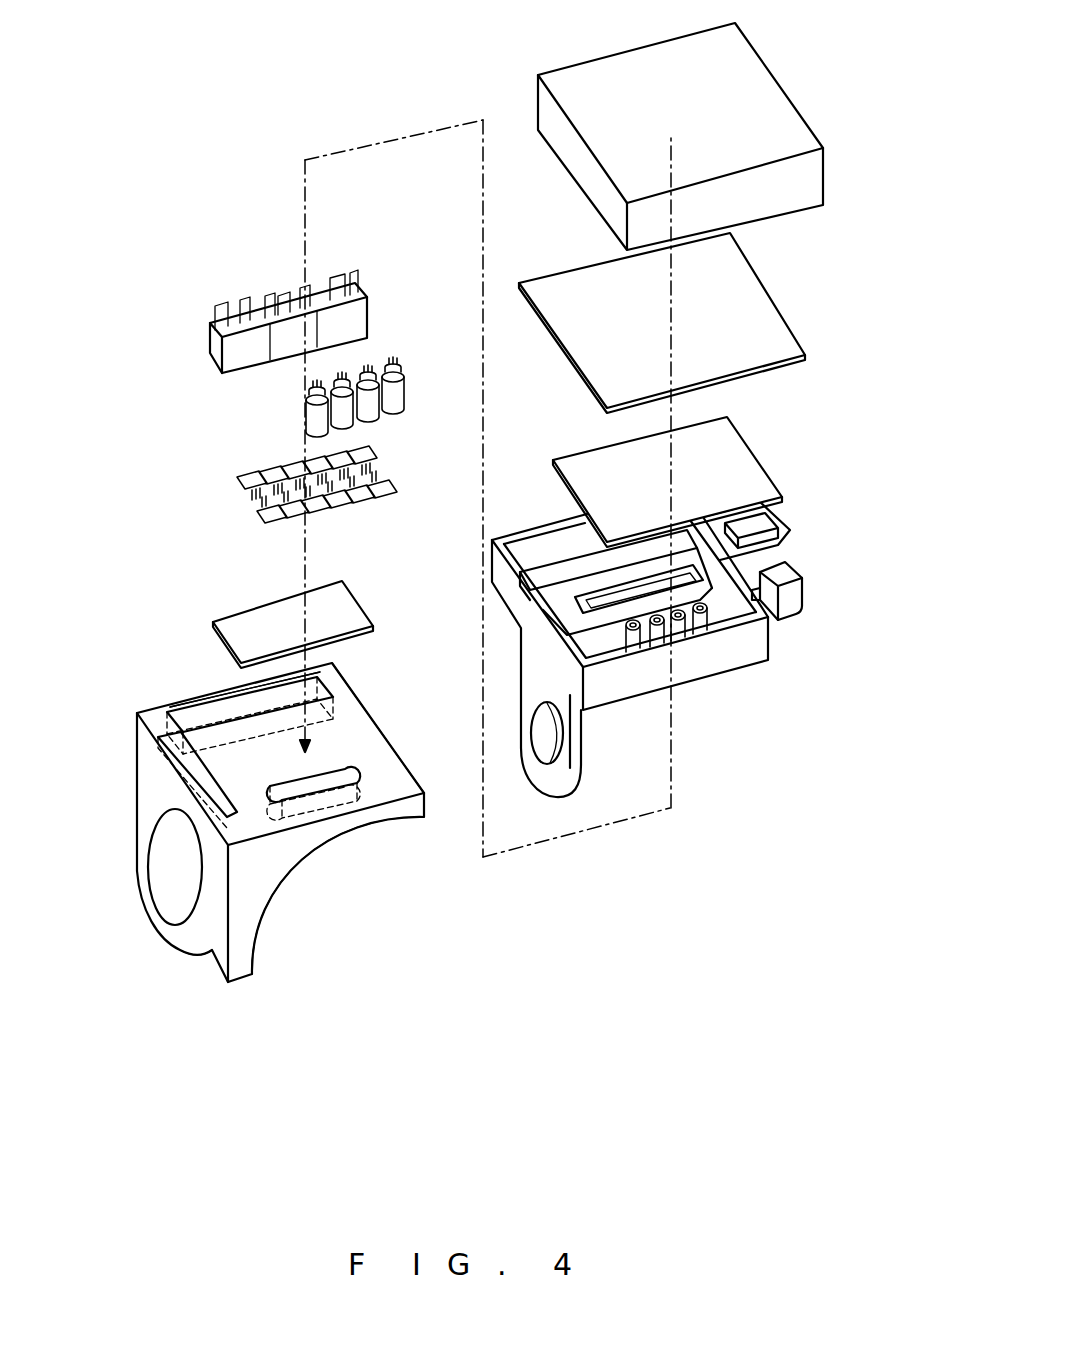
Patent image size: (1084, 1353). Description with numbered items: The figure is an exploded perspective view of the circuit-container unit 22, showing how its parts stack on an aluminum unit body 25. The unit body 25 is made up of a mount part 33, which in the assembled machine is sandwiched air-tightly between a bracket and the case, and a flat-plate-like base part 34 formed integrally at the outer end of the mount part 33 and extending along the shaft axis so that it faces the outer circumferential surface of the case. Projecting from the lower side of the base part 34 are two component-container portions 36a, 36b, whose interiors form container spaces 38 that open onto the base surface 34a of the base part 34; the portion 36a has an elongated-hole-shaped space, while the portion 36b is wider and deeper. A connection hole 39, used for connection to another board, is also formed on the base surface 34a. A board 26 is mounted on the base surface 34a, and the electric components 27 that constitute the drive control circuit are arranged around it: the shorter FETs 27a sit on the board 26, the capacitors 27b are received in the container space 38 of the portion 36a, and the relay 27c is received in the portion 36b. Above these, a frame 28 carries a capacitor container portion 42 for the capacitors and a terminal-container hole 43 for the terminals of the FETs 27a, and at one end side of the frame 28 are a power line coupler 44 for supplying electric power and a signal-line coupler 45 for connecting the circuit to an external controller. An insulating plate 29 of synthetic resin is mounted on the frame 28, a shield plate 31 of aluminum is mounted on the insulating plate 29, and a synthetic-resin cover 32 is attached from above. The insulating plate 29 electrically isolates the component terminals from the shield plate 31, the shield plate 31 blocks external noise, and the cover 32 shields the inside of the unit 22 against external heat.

The unit 22 is at (537, 878).
The unit body 25 is at (267, 839).
The board 26 is at (248, 614).
The electric components 27 is at (306, 378).
The FETs 27a is at (373, 468).
The capacitors 27b is at (370, 367).
The relay 27c is at (258, 292).
The frame 28 is at (733, 660).
The insulating plate 29 is at (733, 458).
The shield plate 31 is at (748, 317).
The cover 32 is at (773, 128).
The mount part 33 is at (208, 943).
The base part 34 is at (388, 795).
The base surface 34a is at (367, 737).
The component-container portion 36a is at (330, 712).
The component-container portion 36b is at (324, 802).
The container spaces 38 is at (198, 710).
The connection hole 39 is at (202, 793).
The capacitor container portion 42 is at (700, 614).
The terminal-container hole 43 is at (580, 606).
The power line coupler 44 is at (778, 533).
The signal-line coupler 45 is at (797, 600).